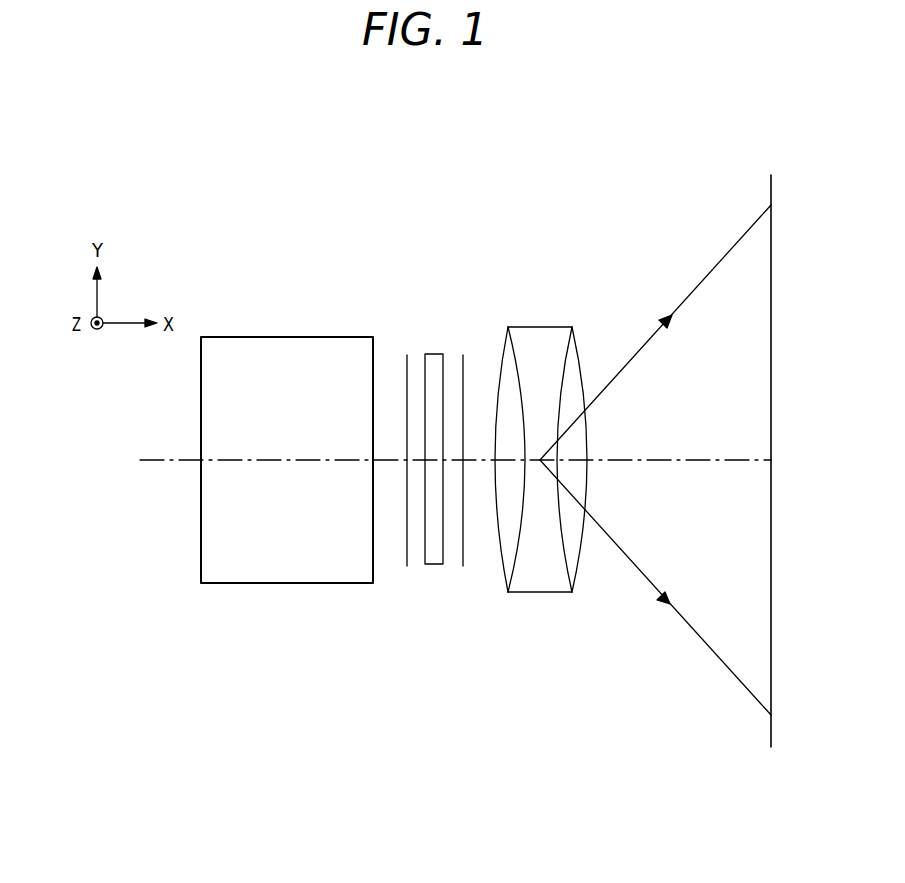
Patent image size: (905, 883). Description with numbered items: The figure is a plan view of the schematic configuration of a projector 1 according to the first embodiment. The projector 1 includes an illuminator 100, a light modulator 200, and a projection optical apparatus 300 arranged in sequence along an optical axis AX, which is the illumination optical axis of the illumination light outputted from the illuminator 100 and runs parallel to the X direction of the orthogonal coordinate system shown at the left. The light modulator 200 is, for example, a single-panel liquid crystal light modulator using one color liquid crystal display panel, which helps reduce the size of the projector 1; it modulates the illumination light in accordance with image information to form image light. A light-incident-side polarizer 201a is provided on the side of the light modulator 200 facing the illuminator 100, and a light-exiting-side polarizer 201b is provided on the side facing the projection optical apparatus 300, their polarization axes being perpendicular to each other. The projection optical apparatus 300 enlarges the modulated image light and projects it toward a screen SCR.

The projector 1 is at (576, 152).
The illuminator 100 is at (247, 337).
The light modulator 200 is at (434, 564).
The light-incident-side polarizer 201a is at (411, 370).
The light-exiting-side polarizer 201b is at (460, 370).
The projection optical apparatus 300 is at (541, 327).
The screen SCR is at (770, 192).
The optical axis AX is at (668, 460).